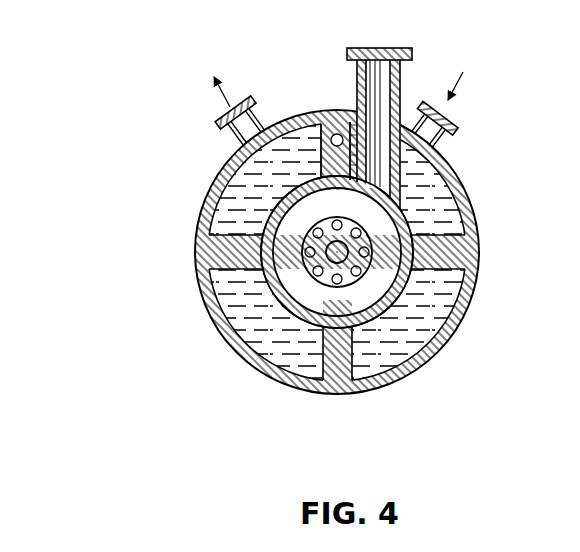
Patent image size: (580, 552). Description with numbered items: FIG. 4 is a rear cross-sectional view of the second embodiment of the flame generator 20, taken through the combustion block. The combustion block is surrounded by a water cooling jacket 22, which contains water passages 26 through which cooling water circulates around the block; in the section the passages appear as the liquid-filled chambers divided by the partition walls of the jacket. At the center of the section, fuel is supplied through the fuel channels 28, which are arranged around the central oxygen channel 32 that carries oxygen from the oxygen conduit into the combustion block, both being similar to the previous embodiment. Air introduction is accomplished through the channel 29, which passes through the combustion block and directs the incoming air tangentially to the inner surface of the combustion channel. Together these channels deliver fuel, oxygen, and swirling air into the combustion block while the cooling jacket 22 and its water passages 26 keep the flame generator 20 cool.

The flame generator 20 is at (488, 283).
The water cooling jacket 22 is at (212, 257).
The water passages 26 is at (228, 190).
The fuel channels 28 is at (304, 252).
The channel 29 is at (383, 138).
The oxygen channel 32 is at (337, 252).